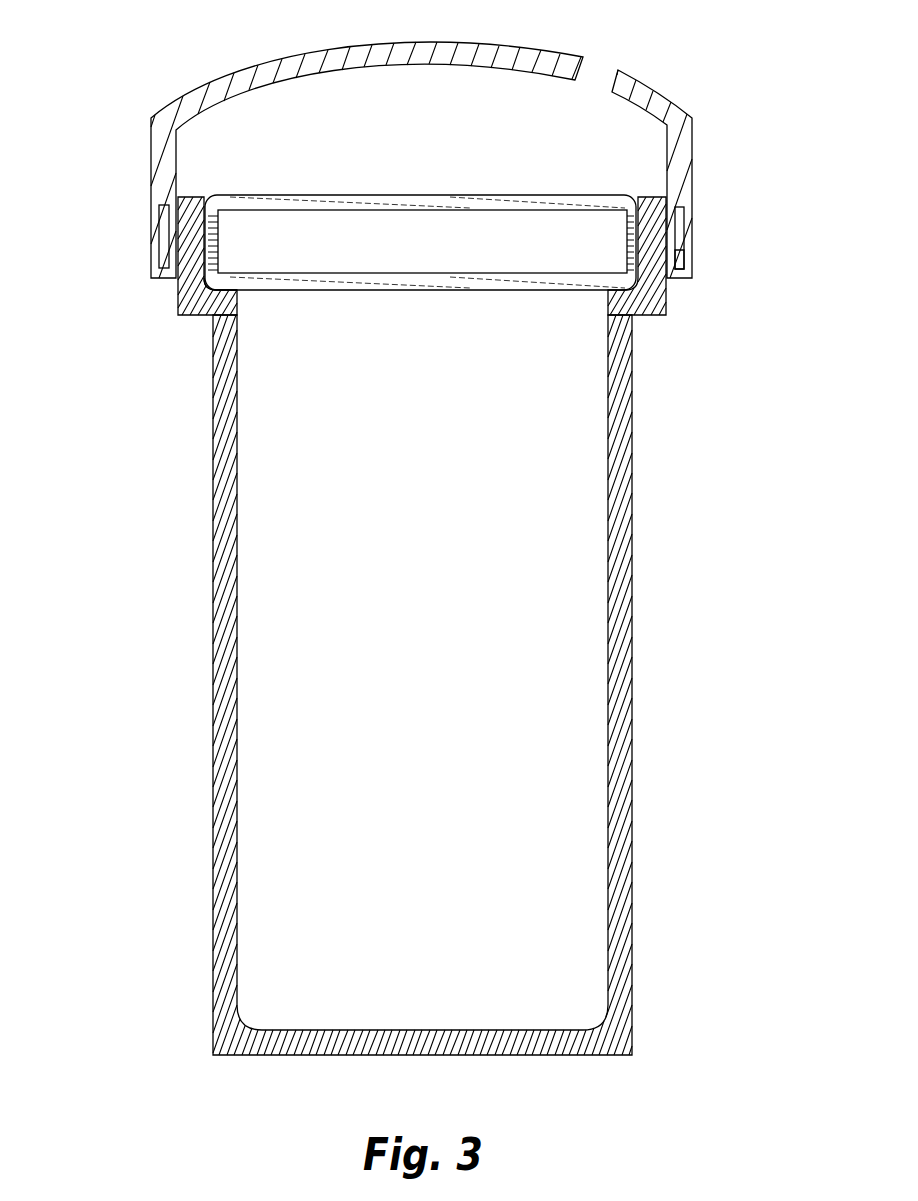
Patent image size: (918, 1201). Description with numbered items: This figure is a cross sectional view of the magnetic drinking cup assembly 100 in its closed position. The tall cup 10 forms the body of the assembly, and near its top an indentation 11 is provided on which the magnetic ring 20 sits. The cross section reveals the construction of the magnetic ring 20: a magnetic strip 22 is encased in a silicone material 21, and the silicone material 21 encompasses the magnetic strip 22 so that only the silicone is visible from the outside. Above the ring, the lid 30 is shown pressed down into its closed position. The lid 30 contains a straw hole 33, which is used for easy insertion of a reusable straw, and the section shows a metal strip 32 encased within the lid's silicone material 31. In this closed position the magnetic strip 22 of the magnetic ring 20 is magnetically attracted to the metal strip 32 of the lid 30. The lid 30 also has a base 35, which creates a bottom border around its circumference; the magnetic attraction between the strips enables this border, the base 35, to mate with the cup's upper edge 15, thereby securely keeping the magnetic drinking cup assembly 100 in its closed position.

The magnetic drinking cup assembly 100 is at (356, 626).
The cup 10 is at (212, 757).
The indentation 11 is at (240, 297).
The upper edge 15 is at (176, 303).
The magnetic ring 20 is at (420, 262).
The silicone material 21 is at (527, 283).
The magnetic strip 22 is at (228, 205).
The lid 30 is at (327, 149).
The silicone material 31 is at (690, 228).
The metal strip 32 is at (690, 262).
The straw hole 33 is at (695, 159).
The base 35 is at (148, 211).